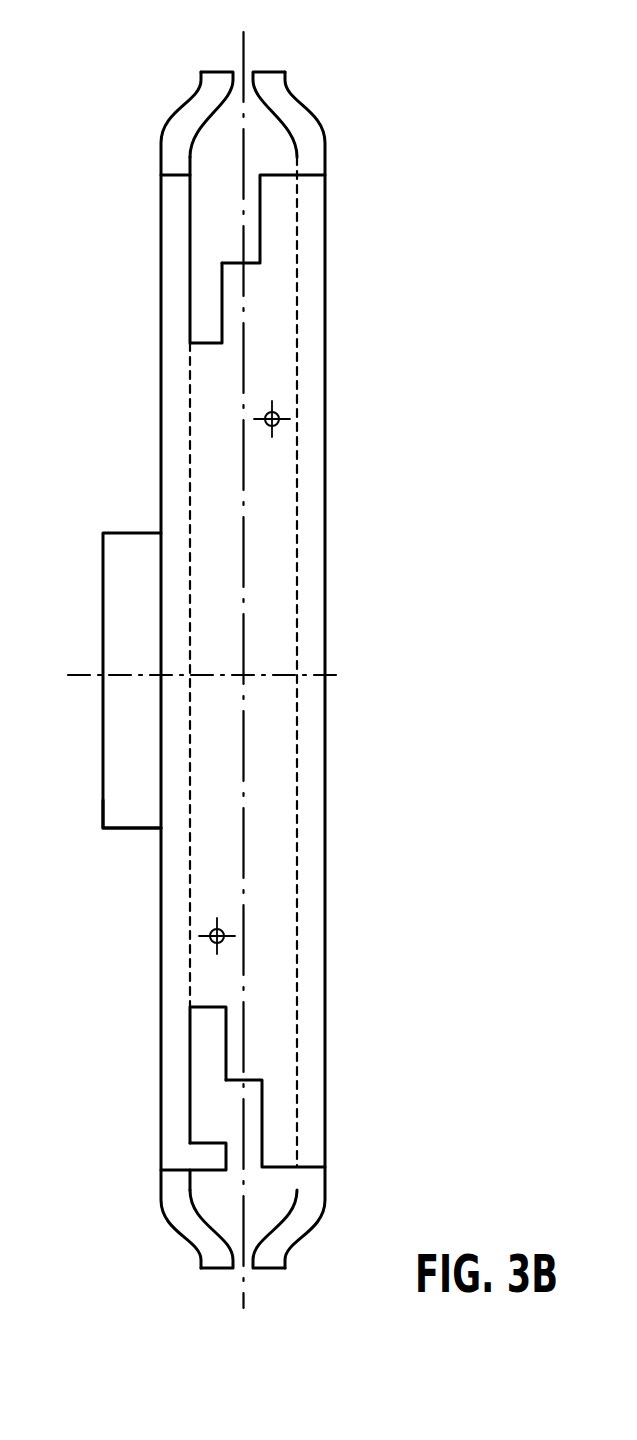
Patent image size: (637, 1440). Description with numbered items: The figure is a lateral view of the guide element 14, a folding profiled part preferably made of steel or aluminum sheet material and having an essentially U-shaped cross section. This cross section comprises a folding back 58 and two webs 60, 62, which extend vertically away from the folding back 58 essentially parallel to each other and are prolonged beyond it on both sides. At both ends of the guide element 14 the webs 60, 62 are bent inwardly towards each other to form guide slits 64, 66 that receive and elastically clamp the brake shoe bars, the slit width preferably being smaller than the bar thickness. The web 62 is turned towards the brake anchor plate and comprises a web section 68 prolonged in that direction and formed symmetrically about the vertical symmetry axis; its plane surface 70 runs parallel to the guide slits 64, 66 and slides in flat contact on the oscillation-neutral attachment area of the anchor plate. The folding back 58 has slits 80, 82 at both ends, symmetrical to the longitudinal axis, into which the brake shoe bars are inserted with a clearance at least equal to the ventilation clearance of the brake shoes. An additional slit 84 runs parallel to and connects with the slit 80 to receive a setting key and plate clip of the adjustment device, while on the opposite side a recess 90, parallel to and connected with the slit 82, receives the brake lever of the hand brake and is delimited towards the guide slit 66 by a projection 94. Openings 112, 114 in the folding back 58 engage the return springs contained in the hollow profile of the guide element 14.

The guide element 14 is at (158, 470).
The folding back 58 is at (268, 633).
The web 60 is at (313, 705).
The web 62 is at (177, 718).
The guide slit 64 is at (245, 90).
The guide slit 66 is at (240, 1260).
The web section 68 is at (128, 797).
The plane surface 70 is at (102, 582).
The slit 80 is at (248, 222).
The slit 82 is at (253, 1118).
The additional slit 84 is at (208, 277).
The recess 90 is at (210, 1067).
The projection 94 is at (207, 1162).
The opening 112 is at (273, 412).
The opening 114 is at (218, 943).